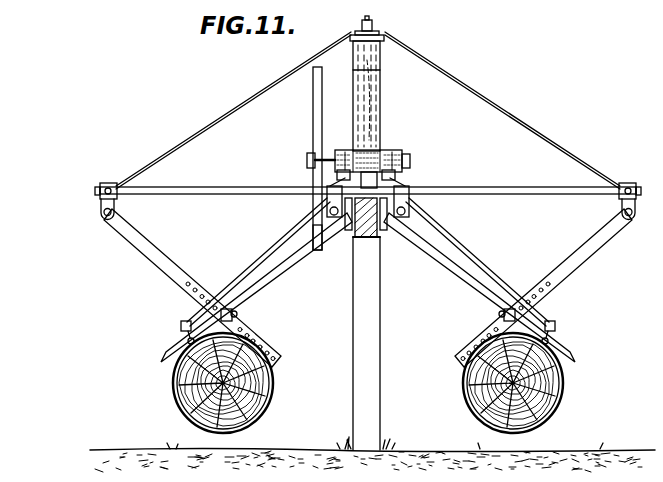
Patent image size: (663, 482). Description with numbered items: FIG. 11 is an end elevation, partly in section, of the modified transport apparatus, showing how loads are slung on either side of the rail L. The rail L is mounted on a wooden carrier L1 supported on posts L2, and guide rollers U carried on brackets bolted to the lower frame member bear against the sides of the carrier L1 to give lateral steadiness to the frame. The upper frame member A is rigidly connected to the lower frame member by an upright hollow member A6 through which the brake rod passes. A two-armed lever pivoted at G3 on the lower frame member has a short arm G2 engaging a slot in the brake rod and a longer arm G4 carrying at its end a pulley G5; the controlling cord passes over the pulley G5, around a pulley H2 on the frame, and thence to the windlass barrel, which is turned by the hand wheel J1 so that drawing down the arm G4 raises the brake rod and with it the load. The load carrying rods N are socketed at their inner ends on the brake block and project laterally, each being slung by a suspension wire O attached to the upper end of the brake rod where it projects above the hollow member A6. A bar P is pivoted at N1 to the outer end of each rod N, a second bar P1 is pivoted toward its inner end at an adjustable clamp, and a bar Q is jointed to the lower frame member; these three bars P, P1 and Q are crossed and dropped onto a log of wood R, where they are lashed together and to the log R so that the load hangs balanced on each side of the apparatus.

The upper frame member A is at (354, 69).
The upright hollow member A6 is at (370, 93).
The short arm of two-armed lever G2 is at (377, 151).
The lever pivot G3 is at (410, 160).
The longer arm of two-armed lever G4 is at (380, 70).
The pulley G5 is at (384, 38).
The pulley H2 is at (395, 177).
The hand wheel J1 is at (313, 131).
The rail L is at (326, 243).
The wooden carrier L1 is at (375, 240).
The post L2 is at (367, 333).
The load carrying rod N is at (211, 192).
The pivot N1 is at (100, 205).
The suspension wire O is at (208, 121).
The bar P is at (181, 275).
The second bar P1 is at (250, 290).
The bar Q is at (262, 257).
The log of wood R is at (257, 400).
The guide roller U is at (382, 218).